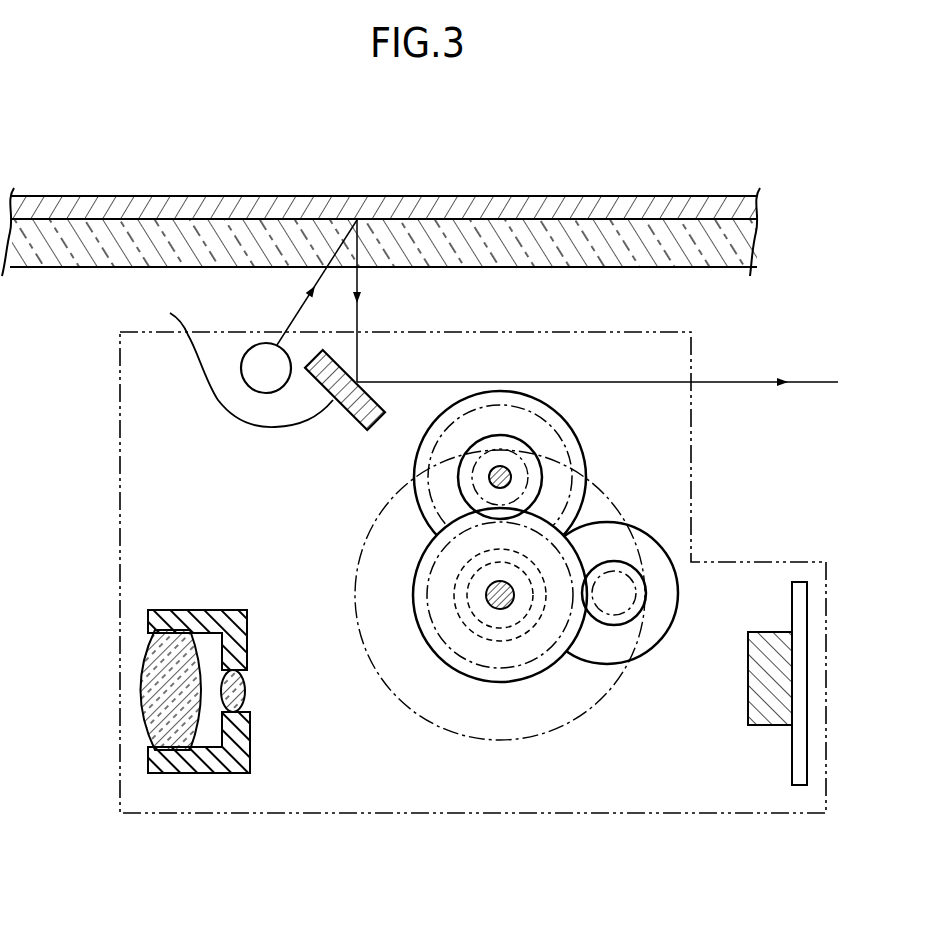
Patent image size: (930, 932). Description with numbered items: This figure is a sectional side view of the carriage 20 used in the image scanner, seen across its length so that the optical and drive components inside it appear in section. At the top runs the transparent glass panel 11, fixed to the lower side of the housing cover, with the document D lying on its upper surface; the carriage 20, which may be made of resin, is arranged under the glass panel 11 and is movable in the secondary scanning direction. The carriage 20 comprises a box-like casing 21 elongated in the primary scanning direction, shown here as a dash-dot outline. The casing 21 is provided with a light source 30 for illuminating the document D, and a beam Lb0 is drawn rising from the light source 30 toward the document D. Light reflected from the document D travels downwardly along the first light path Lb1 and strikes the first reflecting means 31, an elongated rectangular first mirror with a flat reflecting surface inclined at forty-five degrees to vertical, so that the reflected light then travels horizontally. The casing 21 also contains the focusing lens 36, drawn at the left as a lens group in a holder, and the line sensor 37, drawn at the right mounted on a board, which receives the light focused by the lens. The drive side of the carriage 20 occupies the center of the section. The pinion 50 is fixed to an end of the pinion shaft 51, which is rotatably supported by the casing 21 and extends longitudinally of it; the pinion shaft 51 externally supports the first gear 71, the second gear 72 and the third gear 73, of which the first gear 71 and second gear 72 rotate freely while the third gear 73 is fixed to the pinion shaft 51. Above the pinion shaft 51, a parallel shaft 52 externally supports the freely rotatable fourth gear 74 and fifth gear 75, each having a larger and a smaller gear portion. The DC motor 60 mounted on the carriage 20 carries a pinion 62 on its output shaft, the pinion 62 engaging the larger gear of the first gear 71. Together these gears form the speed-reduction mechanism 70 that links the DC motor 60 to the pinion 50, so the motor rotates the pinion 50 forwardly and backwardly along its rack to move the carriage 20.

The document D is at (607, 196).
The glass panel 11 is at (495, 245).
The carriage 20 is at (695, 452).
The casing 21 is at (777, 562).
The light source 30 is at (250, 348).
The first reflecting means 31 is at (170, 313).
The focusing lens 36 is at (172, 773).
The line sensor 37 is at (755, 730).
The pinion 50 is at (443, 662).
The pinion shaft 51 is at (497, 608).
The shaft 52 is at (490, 477).
The DC motor 60 is at (670, 543).
The pinion 62 is at (633, 607).
The speed-reduction mechanism 70 is at (400, 539).
The first gear 71 is at (394, 595).
The second gear 72 is at (487, 595).
The third gear 73 is at (428, 646).
The fourth gear 74 is at (549, 477).
The fifth gear 75 is at (578, 445).
The incident light beam Lb0 is at (357, 320).
The first light path Lb1 is at (740, 382).